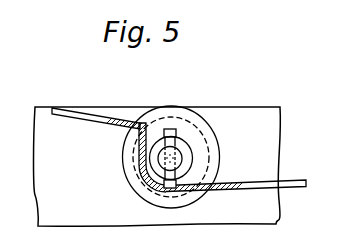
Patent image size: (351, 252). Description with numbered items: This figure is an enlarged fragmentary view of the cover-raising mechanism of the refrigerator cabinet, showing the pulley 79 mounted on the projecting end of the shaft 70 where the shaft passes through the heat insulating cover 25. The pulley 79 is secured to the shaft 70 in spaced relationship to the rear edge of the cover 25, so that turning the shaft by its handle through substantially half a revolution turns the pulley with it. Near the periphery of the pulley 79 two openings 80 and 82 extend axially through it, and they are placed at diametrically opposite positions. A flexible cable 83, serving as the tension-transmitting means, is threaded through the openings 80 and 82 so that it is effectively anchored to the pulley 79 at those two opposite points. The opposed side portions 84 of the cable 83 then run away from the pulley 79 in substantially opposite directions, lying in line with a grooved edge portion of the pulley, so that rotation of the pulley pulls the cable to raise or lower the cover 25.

The heat insulating cover 25 is at (243, 118).
The shaft 70 is at (183, 161).
The pulley 79 is at (187, 122).
The opening 80 is at (143, 123).
The opening 82 is at (208, 193).
The flexible cable 83 is at (152, 183).
The opposed side portions of the cable 84 is at (68, 117).